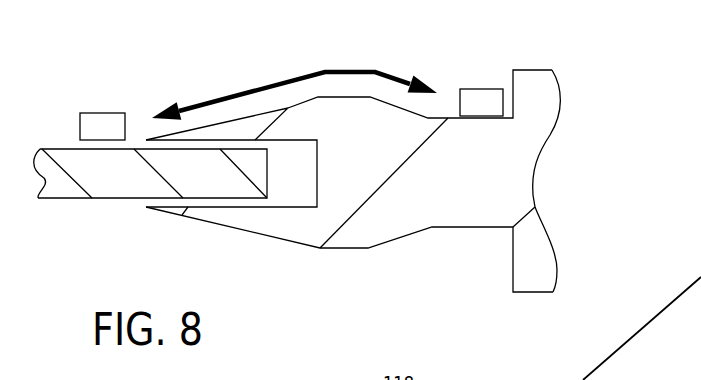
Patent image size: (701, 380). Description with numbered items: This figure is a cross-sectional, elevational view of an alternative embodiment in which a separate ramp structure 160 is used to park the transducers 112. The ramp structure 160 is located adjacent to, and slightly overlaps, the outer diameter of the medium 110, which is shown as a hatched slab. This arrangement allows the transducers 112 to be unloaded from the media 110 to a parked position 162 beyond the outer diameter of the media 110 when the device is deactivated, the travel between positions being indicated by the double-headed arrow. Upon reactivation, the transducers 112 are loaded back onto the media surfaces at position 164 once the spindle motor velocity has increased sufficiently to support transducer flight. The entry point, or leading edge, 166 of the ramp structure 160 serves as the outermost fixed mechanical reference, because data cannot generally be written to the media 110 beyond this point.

The medium 110 is at (133, 185).
The transducer 112 is at (99, 112).
The ramp structure 160 is at (513, 152).
The parked position 162 is at (446, 78).
The loaded position 164 is at (69, 141).
The entry point 166 is at (145, 133).